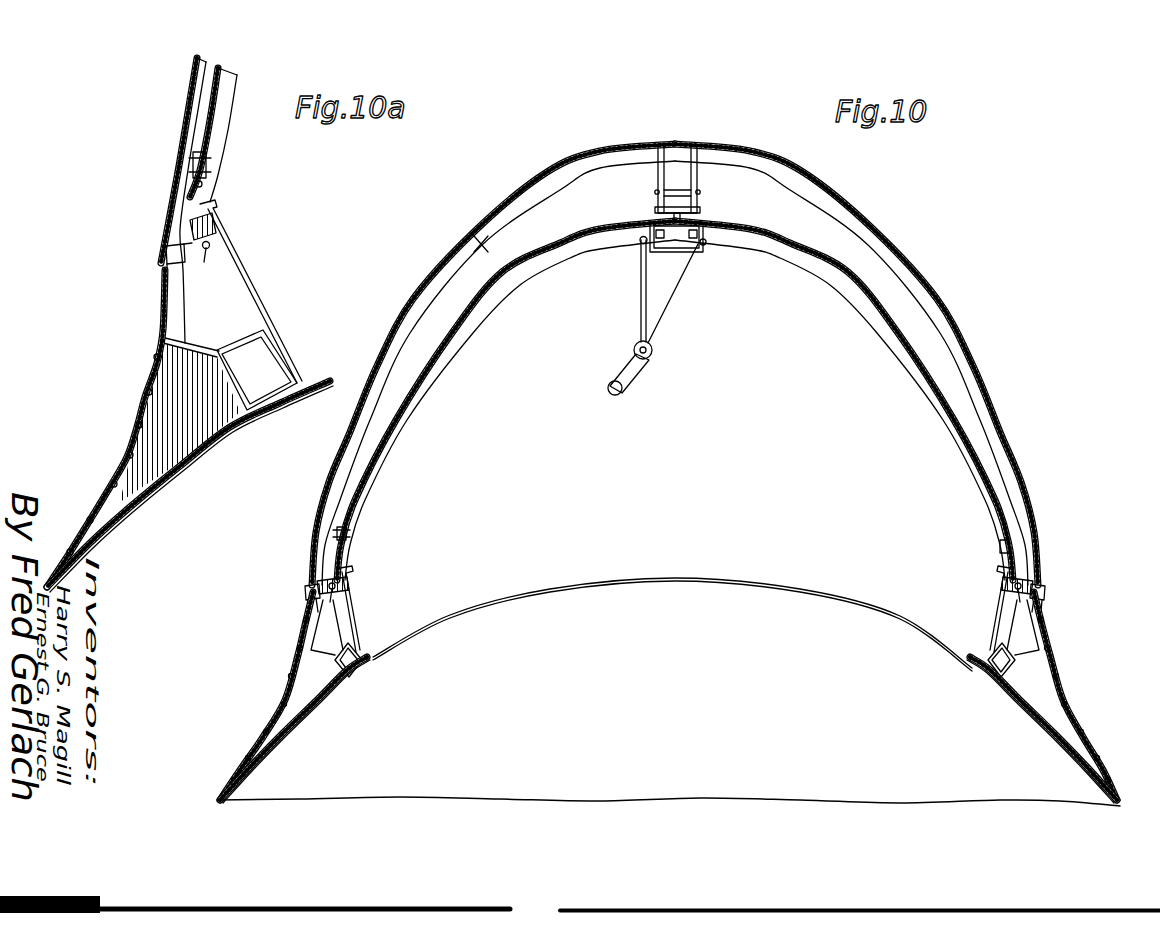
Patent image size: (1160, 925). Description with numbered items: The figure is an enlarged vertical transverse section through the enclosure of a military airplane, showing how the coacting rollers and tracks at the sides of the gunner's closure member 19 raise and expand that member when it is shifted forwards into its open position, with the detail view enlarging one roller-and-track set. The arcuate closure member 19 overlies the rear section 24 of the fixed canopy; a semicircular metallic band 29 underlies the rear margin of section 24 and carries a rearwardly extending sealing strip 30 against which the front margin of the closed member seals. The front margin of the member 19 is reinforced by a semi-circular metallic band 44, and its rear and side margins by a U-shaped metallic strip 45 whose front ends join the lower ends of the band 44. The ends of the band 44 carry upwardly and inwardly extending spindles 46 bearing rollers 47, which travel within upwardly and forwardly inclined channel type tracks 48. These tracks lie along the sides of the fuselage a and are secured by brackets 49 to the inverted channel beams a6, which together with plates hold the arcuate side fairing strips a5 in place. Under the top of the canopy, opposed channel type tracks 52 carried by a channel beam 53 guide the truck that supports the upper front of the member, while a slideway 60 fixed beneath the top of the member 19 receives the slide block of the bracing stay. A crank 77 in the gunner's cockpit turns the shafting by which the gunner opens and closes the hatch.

In FIG. 10, the gunner's hatch type closure member 19 is at (884, 239).
In FIG. 10a, the gunner's hatch type closure member 19 is at (180, 116).
In FIG. 10, the rear section of the canopy 24 is at (823, 264).
In FIG. 10a, the rear section of the canopy 24 is at (198, 134).
In FIG. 10, the semicircular metallic band 29 is at (400, 420).
In FIG. 10, the sealing strip 30 is at (392, 448).
In FIG. 10, the semi-circular metallic band 44 is at (490, 247).
In FIG. 10, the metallic strip 45 is at (348, 535).
In FIG. 10a, the metallic strip 45 is at (208, 152).
In FIG. 10, the spindles 46 is at (310, 599).
In FIG. 10a, the spindles 46 is at (172, 262).
In FIG. 10, the rollers 47 is at (340, 590).
In FIG. 10a, the rollers 47 is at (207, 250).
In FIG. 10, the channel type tracks 48 is at (350, 589).
In FIG. 10a, the channel type tracks 48 is at (214, 238).
In FIG. 10, the brackets 49 is at (352, 598).
In FIG. 10a, the brackets 49 is at (218, 240).
In FIG. 10, the channel type tracks 52 is at (706, 248).
In FIG. 10, the channel beam 53 is at (694, 255).
In FIG. 10, the slideway 60 is at (699, 176).
In FIG. 10, the crank 77 is at (624, 389).
In FIG. 10, the fuselage a is at (327, 697).
In FIG. 10a, the fuselage a is at (177, 472).
In FIG. 10, the side fairing strips a5 is at (292, 680).
In FIG. 10a, the side fairing strips a5 is at (142, 408).
In FIG. 10, the inverted channel beams a6 is at (362, 652).
In FIG. 10a, the inverted channel beams a6 is at (273, 364).